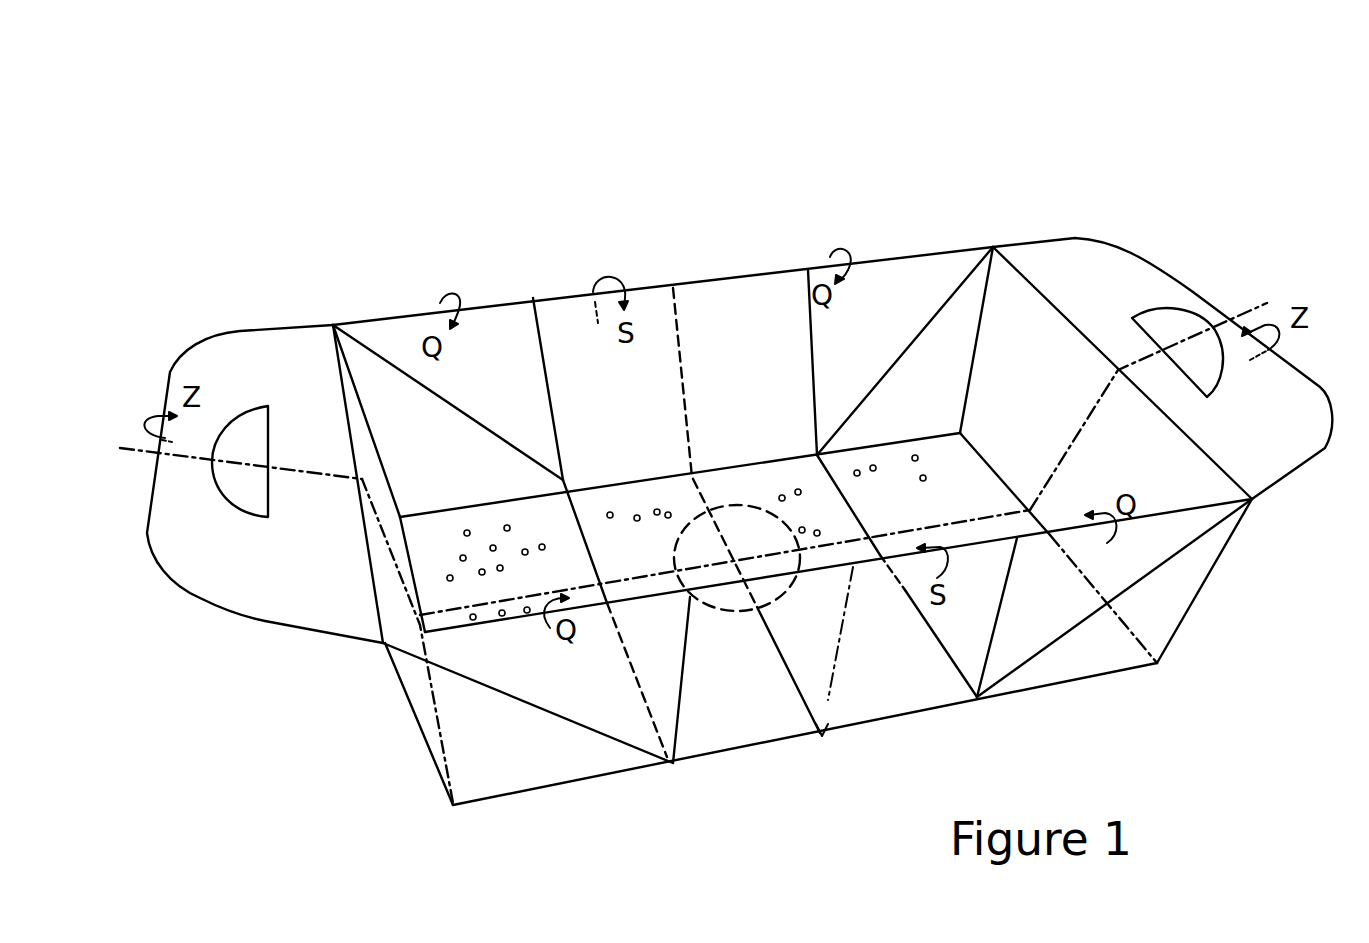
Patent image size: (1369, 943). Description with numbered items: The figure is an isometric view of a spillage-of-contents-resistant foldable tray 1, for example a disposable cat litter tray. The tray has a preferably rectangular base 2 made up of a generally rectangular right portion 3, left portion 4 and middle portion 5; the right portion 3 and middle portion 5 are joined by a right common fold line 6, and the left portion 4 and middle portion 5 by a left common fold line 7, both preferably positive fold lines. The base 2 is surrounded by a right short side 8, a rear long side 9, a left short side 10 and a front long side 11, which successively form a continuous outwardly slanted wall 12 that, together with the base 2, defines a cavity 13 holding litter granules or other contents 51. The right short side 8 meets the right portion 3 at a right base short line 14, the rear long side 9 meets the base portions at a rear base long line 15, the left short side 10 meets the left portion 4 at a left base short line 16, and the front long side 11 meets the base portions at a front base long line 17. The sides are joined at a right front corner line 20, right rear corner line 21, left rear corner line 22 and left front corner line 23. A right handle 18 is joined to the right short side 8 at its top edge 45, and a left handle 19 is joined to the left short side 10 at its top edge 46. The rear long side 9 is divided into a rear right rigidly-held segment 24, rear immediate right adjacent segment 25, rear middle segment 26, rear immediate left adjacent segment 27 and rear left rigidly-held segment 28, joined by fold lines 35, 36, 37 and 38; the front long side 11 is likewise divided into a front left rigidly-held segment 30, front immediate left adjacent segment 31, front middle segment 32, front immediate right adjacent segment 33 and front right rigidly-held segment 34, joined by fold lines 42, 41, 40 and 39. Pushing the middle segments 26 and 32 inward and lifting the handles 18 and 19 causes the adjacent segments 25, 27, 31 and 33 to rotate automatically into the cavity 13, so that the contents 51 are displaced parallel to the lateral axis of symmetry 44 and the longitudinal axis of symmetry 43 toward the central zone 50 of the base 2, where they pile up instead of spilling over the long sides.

The foldable tray 1 is at (1173, 120).
The base 2 is at (721, 483).
The right portion 3 is at (932, 270).
The left portion 4 is at (533, 523).
The middle portion 5 is at (757, 483).
The right common fold line 6 is at (850, 508).
The left common fold line 7 is at (588, 555).
The right short side 8 is at (1195, 487).
The rear long side 9 is at (378, 335).
The left short side 10 is at (388, 616).
The front long side 11 is at (627, 613).
The continuous outwardly slanted wall 12 is at (840, 297).
The cavity 13 is at (787, 480).
The right base short line 14 is at (978, 453).
The rear base long line 15 is at (637, 482).
The left base short line 16 is at (410, 568).
The front base long line 17 is at (748, 747).
The right handle 18 is at (1157, 291).
The left handle 19 is at (162, 525).
The right front corner line 20 is at (1167, 647).
The right rear corner line 21 is at (970, 357).
The left rear corner line 22 is at (377, 460).
The left front corner line 23 is at (417, 717).
The rear right rigidly-held segment 24 is at (963, 297).
The rear immediate right adjacent segment 25 is at (945, 277).
The rear middle segment 26 is at (763, 288).
The rear immediate left adjacent segment 27 is at (498, 318).
The rear left rigidly-held segment 28 is at (377, 370).
The front left rigidly-held segment 30 is at (458, 712).
The front immediate left adjacent segment 31 is at (578, 708).
The front middle segment 32 is at (713, 733).
The front immediate right adjacent segment 33 is at (1012, 658).
The front right rigidly-held segment 34 is at (1130, 653).
The fold line 35 is at (857, 408).
The fold line 36 is at (812, 343).
The fold line 37 is at (552, 390).
The fold line 38 is at (453, 413).
The fold line 39 is at (1045, 647).
The fold line 40 is at (995, 625).
The fold line 41 is at (682, 678).
The fold line 42 is at (535, 703).
The longitudinal axis of symmetry 43 is at (902, 534).
The lateral axis of symmetry 44 is at (807, 685).
The top edge of right short side 45 is at (1203, 457).
The top edge of left short side 46 is at (370, 567).
The central zone 50 is at (760, 538).
The litter granules or other contents 51 is at (470, 530).